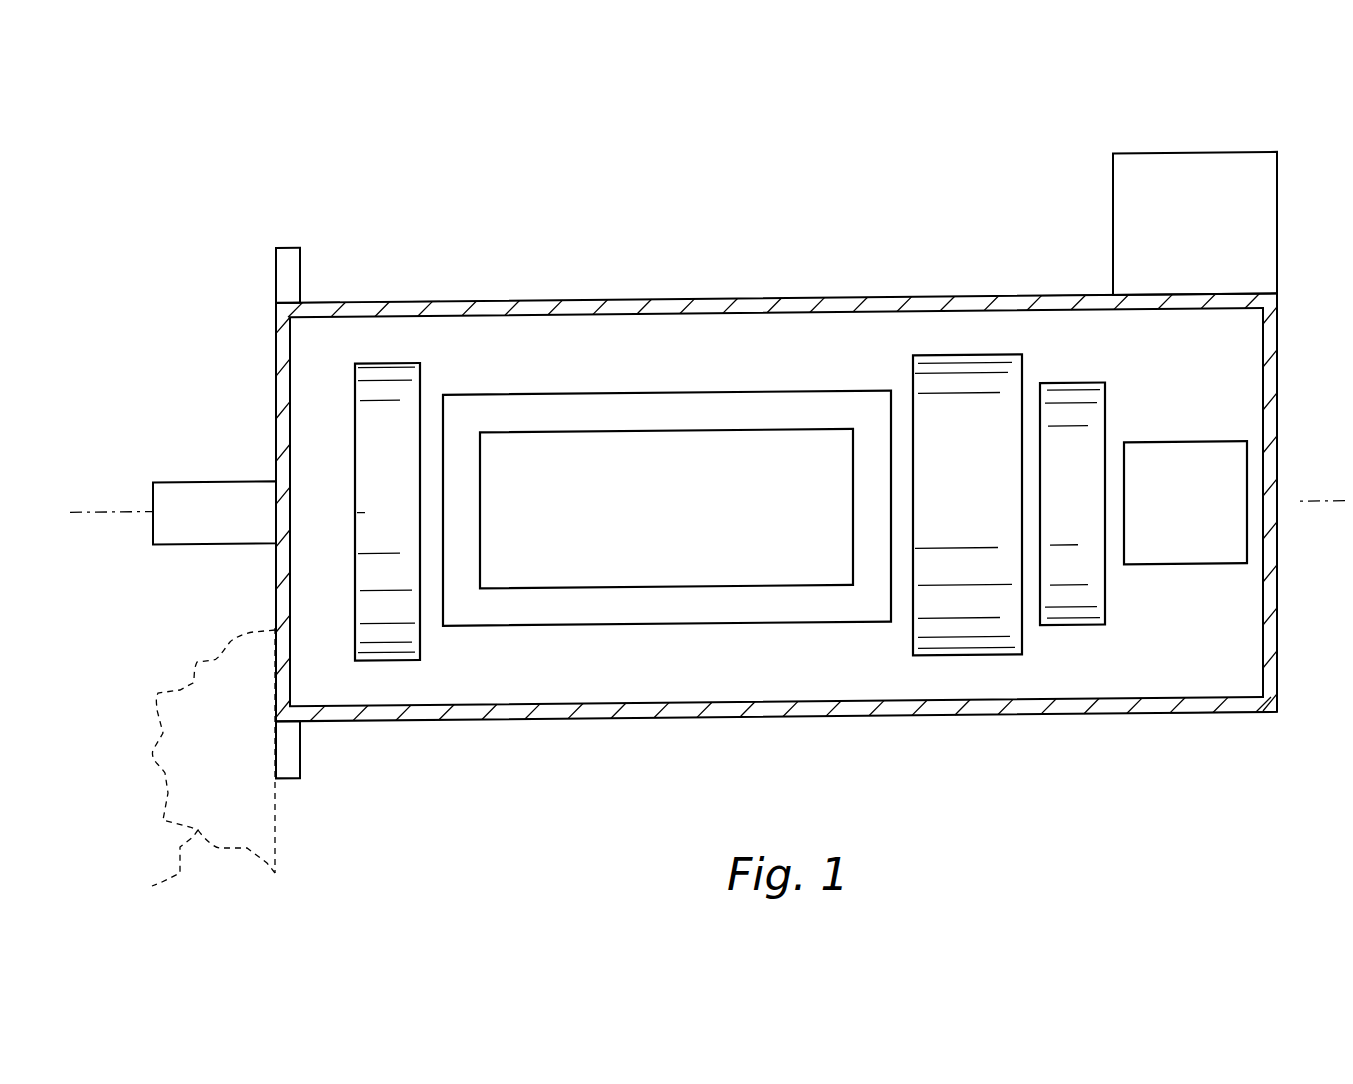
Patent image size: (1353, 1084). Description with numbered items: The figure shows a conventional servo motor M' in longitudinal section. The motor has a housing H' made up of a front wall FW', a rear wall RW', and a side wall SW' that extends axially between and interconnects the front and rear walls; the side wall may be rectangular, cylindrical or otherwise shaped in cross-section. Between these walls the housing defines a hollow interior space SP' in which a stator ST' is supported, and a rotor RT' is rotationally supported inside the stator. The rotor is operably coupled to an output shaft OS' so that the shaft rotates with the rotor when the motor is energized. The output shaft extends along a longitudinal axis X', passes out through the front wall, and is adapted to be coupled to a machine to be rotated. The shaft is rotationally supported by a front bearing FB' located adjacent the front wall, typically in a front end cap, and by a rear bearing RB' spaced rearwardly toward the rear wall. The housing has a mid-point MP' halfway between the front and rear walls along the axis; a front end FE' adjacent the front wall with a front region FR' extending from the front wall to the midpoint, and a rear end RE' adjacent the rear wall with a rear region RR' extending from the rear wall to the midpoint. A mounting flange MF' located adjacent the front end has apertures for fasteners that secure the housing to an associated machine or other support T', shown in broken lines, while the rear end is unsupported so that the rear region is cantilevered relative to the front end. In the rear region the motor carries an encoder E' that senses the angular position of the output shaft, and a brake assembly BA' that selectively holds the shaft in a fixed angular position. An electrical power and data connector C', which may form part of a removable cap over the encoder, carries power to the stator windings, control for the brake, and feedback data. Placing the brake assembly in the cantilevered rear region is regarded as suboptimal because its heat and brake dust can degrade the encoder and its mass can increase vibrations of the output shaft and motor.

The servo motor M is at (532, 285).
The housing H is at (856, 722).
The mid-point MP is at (775, 292).
The front end FE is at (322, 290).
The front region FR is at (410, 295).
The rear region RR is at (1080, 282).
The rear end RE is at (1190, 718).
The front wall FW is at (275, 353).
The rear wall RW is at (1277, 377).
The side wall SW is at (632, 720).
The mounting flange MF is at (283, 268).
The output shaft OS is at (210, 498).
The longitudinal axis X is at (102, 512).
The stator ST is at (555, 395).
The rotor RT is at (672, 430).
The interior space SP is at (795, 356).
The front bearing FB is at (390, 672).
The brake assembly BA is at (964, 670).
The rear bearing RB is at (1078, 640).
The encoder E is at (1193, 441).
The electrical power and data connector C is at (1197, 152).
The support T is at (147, 865).